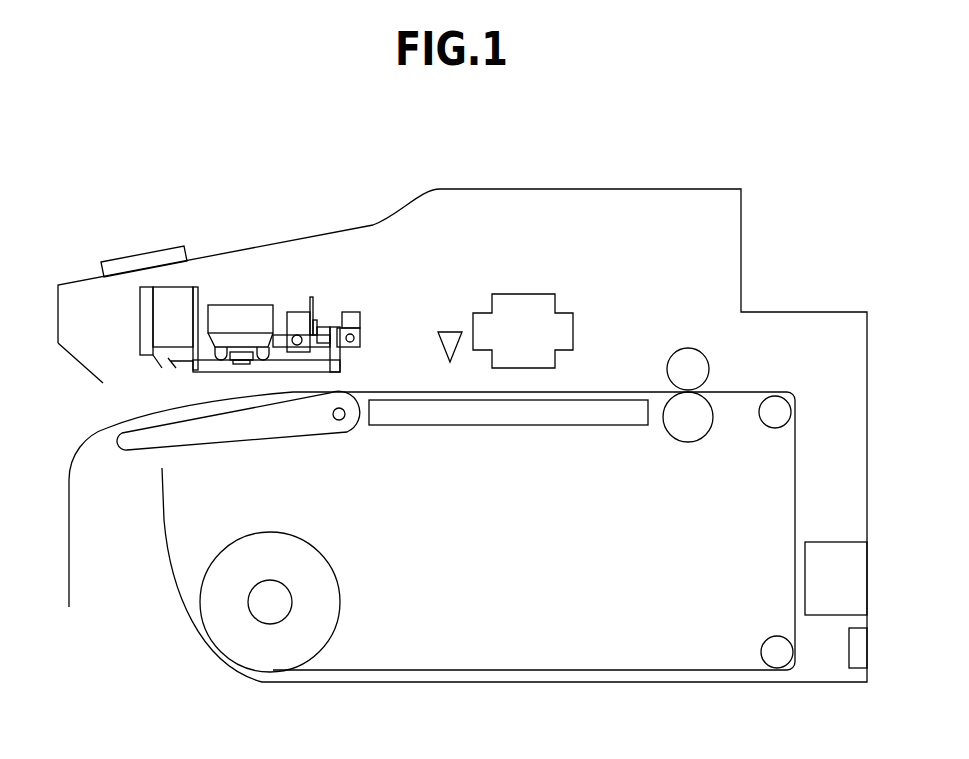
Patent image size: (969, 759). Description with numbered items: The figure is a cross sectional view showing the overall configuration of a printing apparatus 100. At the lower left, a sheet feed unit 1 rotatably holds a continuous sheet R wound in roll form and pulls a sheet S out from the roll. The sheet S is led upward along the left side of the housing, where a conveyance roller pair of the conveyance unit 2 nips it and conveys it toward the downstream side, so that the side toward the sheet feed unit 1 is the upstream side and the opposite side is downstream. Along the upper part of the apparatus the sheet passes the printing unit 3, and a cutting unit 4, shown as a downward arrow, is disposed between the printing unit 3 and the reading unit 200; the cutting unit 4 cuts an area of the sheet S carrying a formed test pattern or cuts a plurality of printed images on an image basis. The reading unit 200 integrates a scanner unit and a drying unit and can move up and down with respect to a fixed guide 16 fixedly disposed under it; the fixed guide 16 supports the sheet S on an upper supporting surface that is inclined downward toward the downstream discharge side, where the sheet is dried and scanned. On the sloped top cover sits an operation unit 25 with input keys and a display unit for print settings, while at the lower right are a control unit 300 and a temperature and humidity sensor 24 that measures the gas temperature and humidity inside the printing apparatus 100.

The printing apparatus 100 is at (831, 258).
The sheet S is at (68, 505).
The operation unit 25 is at (133, 258).
The reading unit 200 is at (224, 278).
The fixed guide 16 is at (267, 430).
The cutting unit 4 is at (456, 332).
The printing unit 3 is at (523, 305).
The conveyance unit 2 is at (703, 415).
The continuous sheet R is at (327, 593).
The sheet feed unit 1 is at (270, 610).
The control unit 300 is at (827, 607).
The temperature and humidity sensor 24 is at (858, 667).